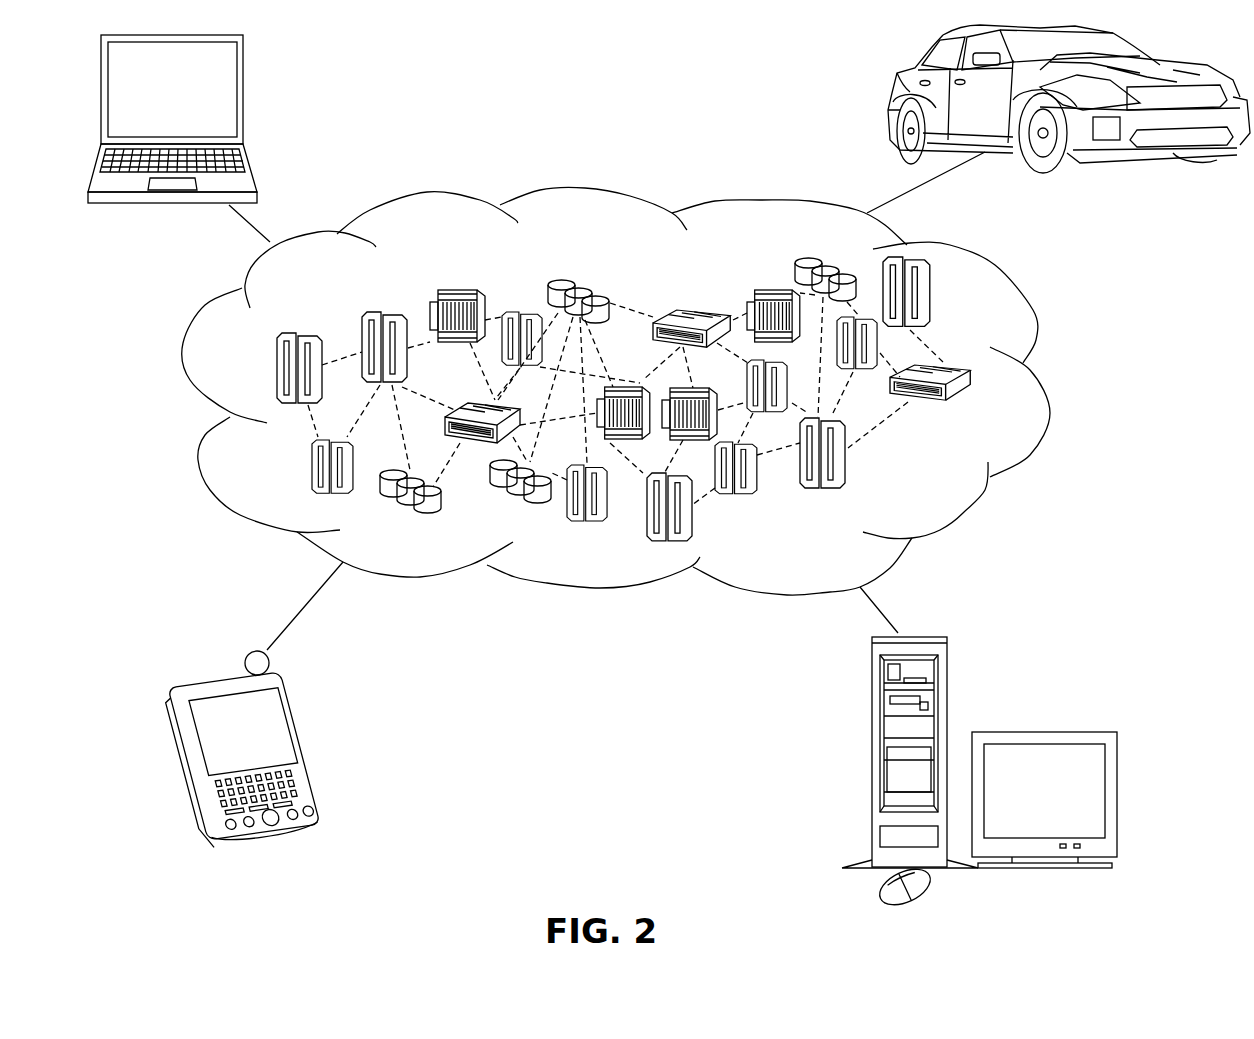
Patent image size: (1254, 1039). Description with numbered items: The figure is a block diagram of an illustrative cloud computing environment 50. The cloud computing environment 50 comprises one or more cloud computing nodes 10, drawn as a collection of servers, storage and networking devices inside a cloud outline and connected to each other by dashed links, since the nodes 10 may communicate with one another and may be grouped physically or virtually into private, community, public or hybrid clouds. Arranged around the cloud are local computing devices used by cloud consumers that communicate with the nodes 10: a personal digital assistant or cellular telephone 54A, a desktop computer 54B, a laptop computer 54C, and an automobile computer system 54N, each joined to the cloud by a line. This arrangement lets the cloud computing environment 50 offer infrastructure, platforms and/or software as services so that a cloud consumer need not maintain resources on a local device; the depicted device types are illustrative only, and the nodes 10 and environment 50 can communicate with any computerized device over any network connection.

The cloud computing environment 50 is at (1043, 382).
The cloud computing nodes 10 is at (950, 484).
The personal digital assistant or cellular telephone 54A is at (297, 712).
The desktop computer 54B is at (872, 697).
The laptop computer 54C is at (243, 74).
The automobile computer system 54N is at (887, 92).